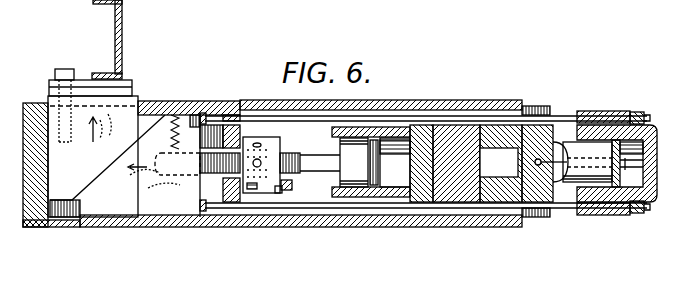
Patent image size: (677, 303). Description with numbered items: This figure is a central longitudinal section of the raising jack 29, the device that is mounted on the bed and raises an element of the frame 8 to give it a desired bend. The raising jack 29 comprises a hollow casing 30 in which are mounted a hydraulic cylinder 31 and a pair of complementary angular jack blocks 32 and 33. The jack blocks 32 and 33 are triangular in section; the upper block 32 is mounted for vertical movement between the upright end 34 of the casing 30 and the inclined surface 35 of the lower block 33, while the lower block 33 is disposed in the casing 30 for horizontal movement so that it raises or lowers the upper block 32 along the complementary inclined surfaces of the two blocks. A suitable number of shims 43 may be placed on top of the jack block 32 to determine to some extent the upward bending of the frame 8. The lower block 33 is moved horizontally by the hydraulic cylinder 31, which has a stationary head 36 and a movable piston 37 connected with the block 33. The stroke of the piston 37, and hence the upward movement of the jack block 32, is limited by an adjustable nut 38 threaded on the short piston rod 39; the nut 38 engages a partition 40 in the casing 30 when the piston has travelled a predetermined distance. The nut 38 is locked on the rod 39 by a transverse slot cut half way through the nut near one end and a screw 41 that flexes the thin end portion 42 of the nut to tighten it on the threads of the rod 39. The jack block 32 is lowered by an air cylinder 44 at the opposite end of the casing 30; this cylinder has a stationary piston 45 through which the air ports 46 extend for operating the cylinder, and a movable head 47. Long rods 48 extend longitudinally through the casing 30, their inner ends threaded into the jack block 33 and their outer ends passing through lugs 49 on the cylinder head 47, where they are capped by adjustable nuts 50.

The frame 8 is at (110, 30).
The raising jack 29 is at (426, 91).
The casing 30 is at (246, 99).
The hydraulic cylinder 31 is at (332, 131).
The upper jack block 32 is at (139, 94).
The lower jack block 33 is at (168, 113).
The upright end 34 is at (34, 103).
The inclined surface 35 is at (102, 170).
The stationary head 36 is at (409, 178).
The piston 37 is at (359, 162).
The adjustable nut 38 is at (259, 135).
The piston rod 39 is at (292, 152).
The partition 40 is at (224, 186).
The screw 41 is at (292, 187).
The thin end portion 42 is at (283, 191).
The shims 43 is at (126, 76).
The air cylinder 44 is at (623, 107).
The stationary piston 45 is at (587, 162).
The air ports 46 is at (466, 163).
The movable head 47 is at (653, 203).
The long rods 48 is at (561, 116).
The lugs 49 is at (593, 111).
The adjustable nuts 50 is at (643, 107).